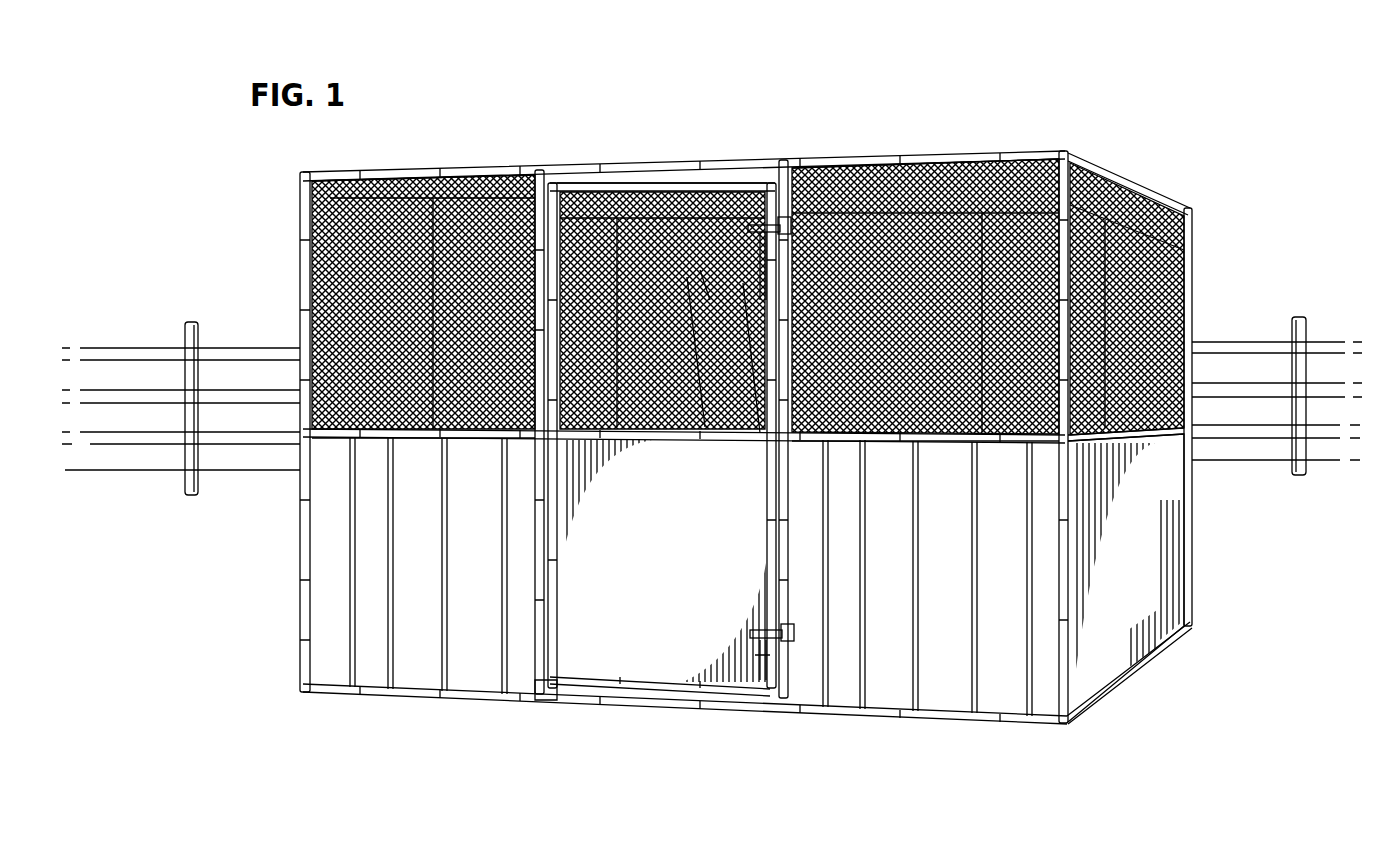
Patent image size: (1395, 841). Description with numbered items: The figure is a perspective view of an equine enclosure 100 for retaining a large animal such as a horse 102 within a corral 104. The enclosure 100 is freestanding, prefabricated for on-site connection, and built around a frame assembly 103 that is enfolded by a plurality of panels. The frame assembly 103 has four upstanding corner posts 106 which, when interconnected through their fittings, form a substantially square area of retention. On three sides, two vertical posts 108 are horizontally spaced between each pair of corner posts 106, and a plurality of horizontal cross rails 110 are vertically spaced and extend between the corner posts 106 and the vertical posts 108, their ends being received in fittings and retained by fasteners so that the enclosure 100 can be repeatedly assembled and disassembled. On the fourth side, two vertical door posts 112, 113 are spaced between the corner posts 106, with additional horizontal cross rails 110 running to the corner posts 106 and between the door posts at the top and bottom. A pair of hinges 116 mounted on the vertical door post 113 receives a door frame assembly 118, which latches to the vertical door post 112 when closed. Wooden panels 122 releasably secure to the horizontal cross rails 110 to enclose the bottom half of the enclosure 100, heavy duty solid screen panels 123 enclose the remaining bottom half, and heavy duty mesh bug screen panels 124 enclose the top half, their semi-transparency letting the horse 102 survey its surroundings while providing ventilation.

The enclosure 100 is at (1013, 133).
The horse 102 is at (718, 285).
The frame assembly 103 is at (585, 162).
The corral 104 is at (122, 340).
The upstanding corner post 106 is at (1075, 161).
The vertical post 108 is at (407, 168).
The horizontal cross rail 110 is at (350, 177).
The vertical door post 112 is at (546, 696).
The vertical door post 113 is at (790, 600).
The hinge 116 is at (800, 215).
The door frame assembly 118 is at (630, 688).
The wooden panel 122 is at (685, 577).
The solid screen panel 123 is at (1126, 578).
The bug screen panel 124 is at (665, 200).